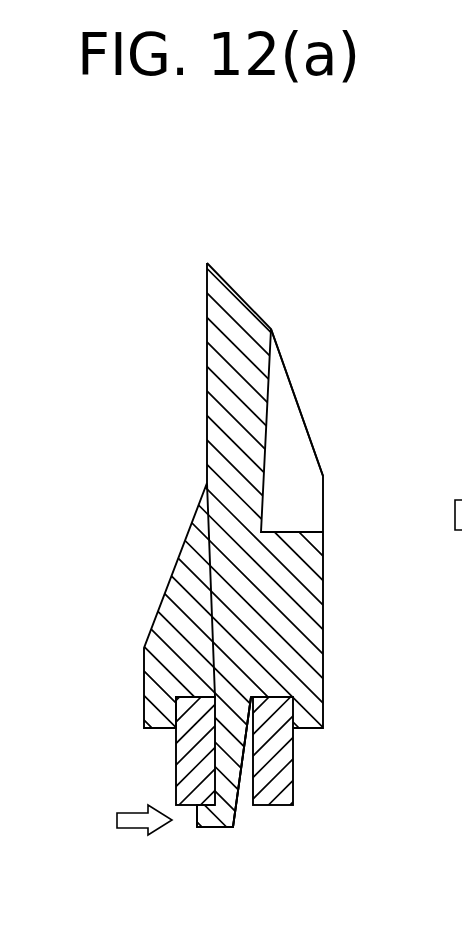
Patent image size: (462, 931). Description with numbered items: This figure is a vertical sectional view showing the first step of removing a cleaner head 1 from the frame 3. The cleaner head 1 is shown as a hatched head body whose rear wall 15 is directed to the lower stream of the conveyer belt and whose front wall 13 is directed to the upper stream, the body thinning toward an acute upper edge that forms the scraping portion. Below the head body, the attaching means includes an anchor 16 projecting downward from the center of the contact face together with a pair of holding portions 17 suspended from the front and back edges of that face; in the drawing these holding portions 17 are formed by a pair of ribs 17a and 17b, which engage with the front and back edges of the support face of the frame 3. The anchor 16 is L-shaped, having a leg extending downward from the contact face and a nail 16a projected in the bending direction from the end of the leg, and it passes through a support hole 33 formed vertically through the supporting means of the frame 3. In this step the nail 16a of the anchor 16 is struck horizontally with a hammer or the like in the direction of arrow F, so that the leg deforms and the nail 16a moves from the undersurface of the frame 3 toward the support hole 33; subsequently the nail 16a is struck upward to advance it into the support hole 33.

The cleaner head 1 is at (208, 318).
The front wall 13 is at (297, 393).
The rear wall 15 is at (208, 393).
The holding portions 17 is at (228, 736).
The rib 17a is at (311, 729).
The rib 17b is at (157, 730).
The frame 3 is at (228, 736).
The support hole 33 is at (252, 806).
The anchor 16 is at (230, 828).
The nail 16a is at (197, 822).
The arrow F is at (138, 829).